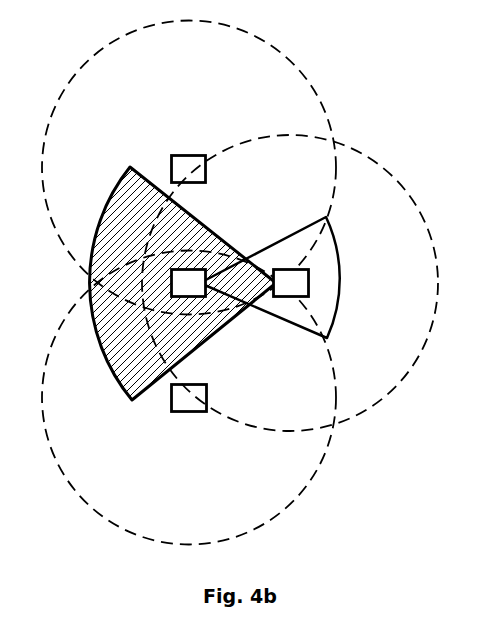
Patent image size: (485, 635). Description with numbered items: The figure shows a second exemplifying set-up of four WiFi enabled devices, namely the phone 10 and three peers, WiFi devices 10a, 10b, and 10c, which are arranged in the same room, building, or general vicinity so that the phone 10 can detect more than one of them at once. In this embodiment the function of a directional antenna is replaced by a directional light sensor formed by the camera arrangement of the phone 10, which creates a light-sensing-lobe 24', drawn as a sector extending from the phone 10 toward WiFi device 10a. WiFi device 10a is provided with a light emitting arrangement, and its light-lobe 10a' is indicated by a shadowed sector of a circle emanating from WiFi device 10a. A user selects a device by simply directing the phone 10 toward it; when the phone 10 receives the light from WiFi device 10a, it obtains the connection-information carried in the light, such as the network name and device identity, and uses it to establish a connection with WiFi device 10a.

The phone 10 is at (189, 283).
The WiFi device 10a is at (290, 283).
The WiFi device 10b is at (189, 168).
The WiFi device 10c is at (189, 398).
The light-lobe 10a' is at (229, 282).
The light-sensing-lobe 24' is at (283, 277).